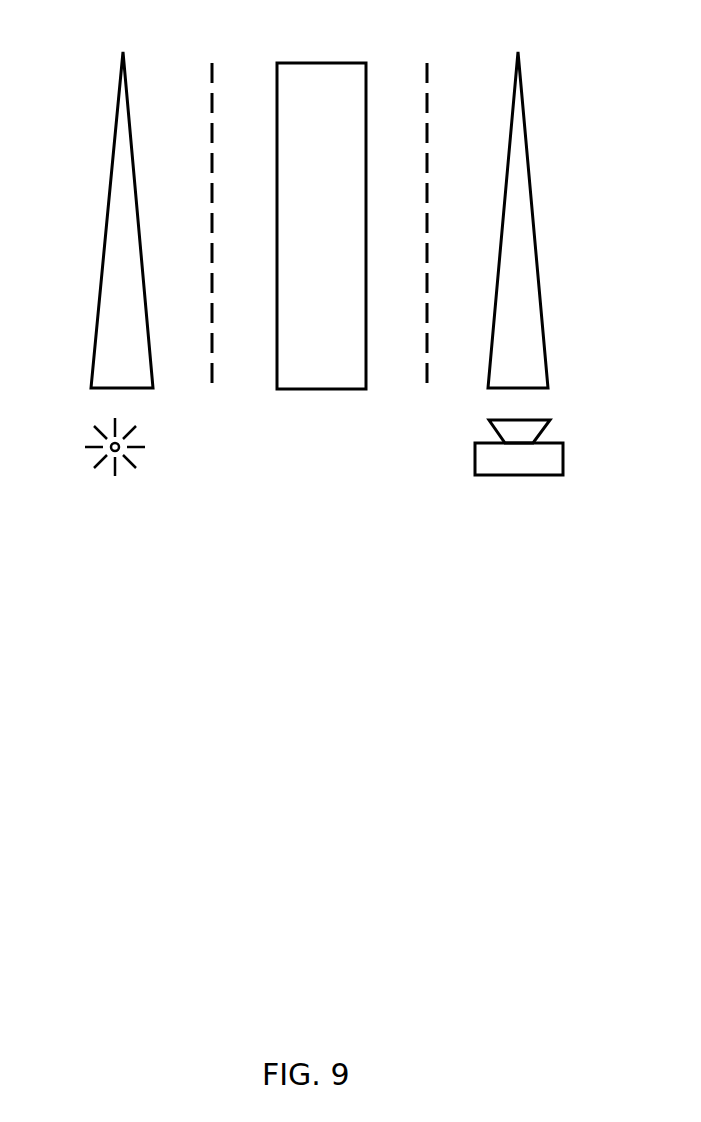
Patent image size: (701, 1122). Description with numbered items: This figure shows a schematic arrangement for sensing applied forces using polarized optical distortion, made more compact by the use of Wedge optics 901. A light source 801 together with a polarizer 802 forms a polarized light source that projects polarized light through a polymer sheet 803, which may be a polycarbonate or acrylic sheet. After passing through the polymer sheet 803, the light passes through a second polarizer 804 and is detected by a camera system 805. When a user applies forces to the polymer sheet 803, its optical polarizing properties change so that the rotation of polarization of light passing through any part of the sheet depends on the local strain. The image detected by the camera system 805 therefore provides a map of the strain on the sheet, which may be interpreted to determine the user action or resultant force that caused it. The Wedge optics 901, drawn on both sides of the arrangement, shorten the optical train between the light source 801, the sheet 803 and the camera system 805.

The light source 801 is at (100, 477).
The polarizer 802 is at (212, 70).
The polymer sheet 803 is at (342, 63).
The polarizer 804 is at (427, 70).
The camera system 805 is at (540, 475).
The Wedge optics 901 is at (105, 230).